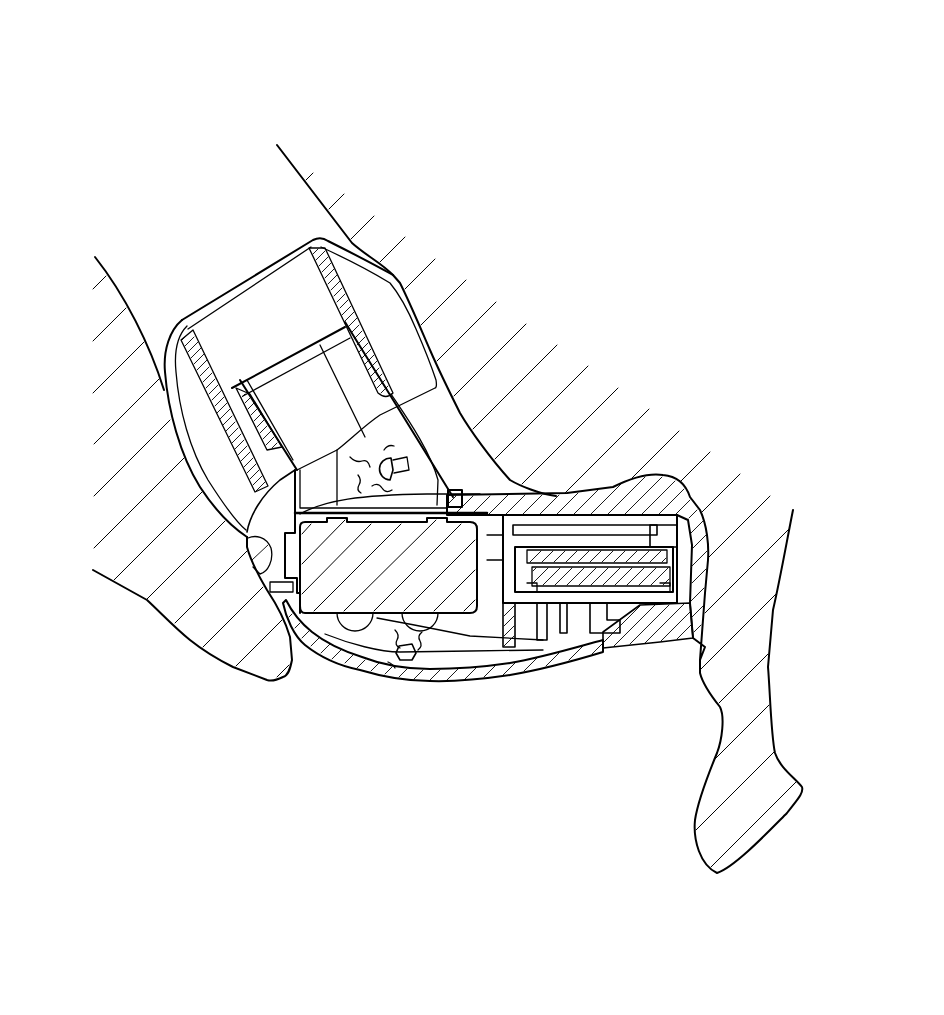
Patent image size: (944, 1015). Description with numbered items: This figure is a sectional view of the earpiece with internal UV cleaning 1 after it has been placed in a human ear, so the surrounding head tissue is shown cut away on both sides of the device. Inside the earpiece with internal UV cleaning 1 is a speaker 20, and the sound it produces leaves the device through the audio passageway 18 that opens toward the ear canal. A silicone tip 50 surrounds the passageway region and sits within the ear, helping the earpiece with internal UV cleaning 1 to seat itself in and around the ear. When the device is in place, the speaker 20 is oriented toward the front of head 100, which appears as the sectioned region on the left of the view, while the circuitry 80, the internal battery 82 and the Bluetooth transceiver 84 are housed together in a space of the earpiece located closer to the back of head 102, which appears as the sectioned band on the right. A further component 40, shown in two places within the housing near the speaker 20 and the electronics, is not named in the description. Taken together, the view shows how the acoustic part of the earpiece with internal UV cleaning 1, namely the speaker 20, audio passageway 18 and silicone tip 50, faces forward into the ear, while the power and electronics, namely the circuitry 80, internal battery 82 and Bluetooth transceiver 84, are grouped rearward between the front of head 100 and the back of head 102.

The earpiece with internal UV cleaning 1 is at (122, 59).
The audio passageway 18 is at (247, 327).
The speaker 20 is at (362, 582).
The screw 40 is at (395, 455).
The silicone tip 50 is at (405, 287).
The circuitry 80 is at (600, 553).
The internal battery 82 is at (655, 641).
The Bluetooth transceiver 84 is at (517, 605).
The front of head 100 is at (190, 641).
The back of head 102 is at (769, 637).